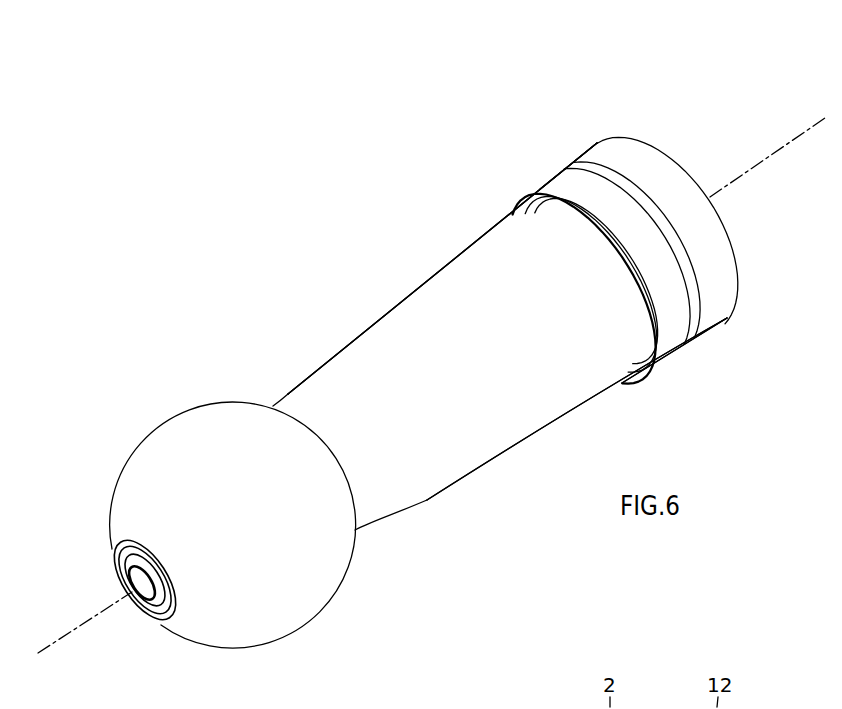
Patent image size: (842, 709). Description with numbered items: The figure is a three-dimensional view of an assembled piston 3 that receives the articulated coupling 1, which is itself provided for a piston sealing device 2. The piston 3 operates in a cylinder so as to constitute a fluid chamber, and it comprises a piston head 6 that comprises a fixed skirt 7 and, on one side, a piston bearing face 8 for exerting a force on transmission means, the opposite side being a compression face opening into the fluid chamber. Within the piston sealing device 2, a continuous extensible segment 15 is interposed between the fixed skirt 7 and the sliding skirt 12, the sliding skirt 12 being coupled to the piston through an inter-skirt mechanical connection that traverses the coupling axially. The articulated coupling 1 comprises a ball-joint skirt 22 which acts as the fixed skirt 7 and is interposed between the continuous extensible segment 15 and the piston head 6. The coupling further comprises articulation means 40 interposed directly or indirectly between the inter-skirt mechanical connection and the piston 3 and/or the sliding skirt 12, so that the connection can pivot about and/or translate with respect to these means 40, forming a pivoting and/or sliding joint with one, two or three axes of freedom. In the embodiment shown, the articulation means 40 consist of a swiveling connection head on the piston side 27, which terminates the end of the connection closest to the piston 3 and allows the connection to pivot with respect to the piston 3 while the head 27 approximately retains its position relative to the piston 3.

The articulated coupling 1 is at (490, 193).
The piston sealing device 2 is at (588, 143).
The piston 3 is at (360, 385).
The piston head 6 is at (388, 340).
The fixed skirt 7 is at (545, 190).
The piston bearing face 8 is at (150, 495).
The sliding skirt 12 is at (637, 158).
The continuous extensible segment 15 is at (655, 211).
The ball-joint skirt 22 is at (664, 338).
The swiveling connection head on the piston side 27 is at (147, 608).
The articulation means 40 is at (114, 571).